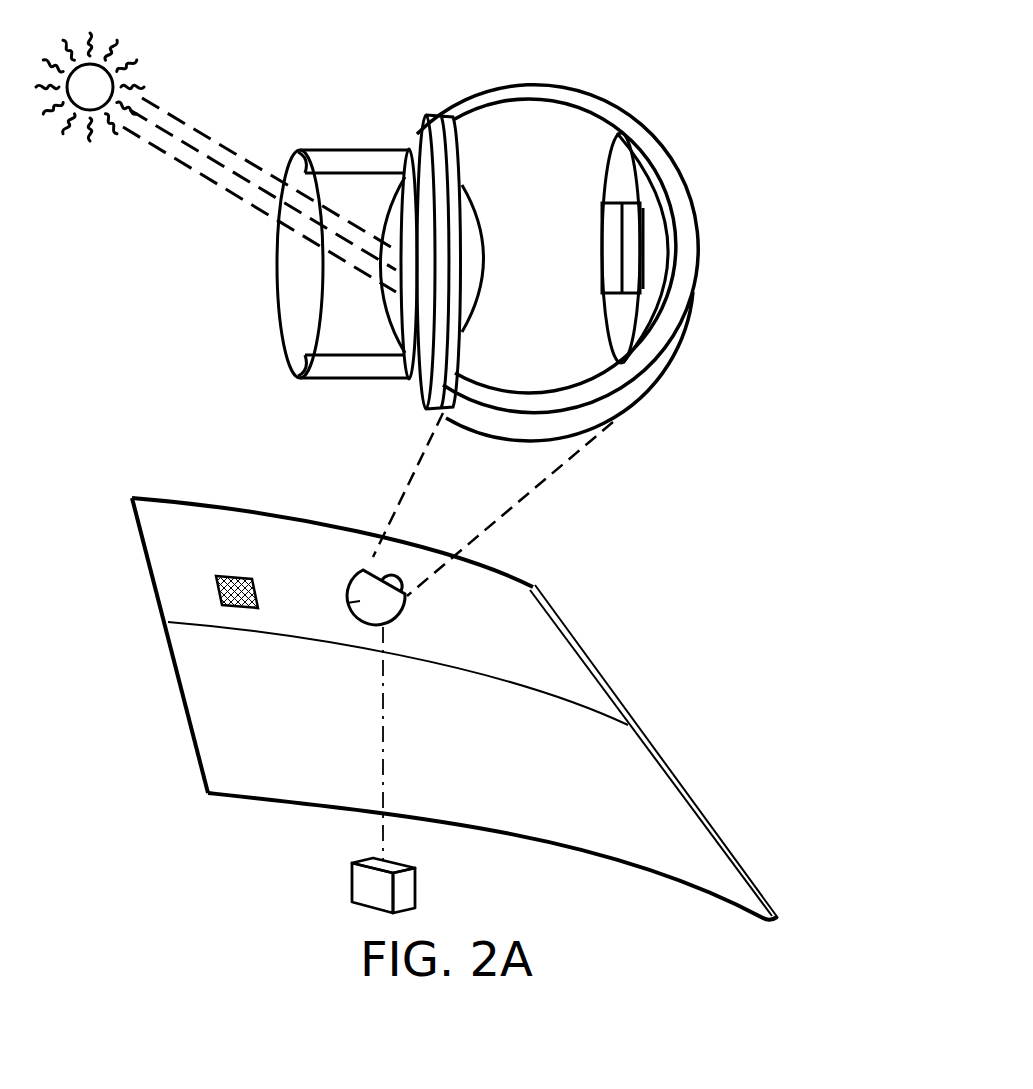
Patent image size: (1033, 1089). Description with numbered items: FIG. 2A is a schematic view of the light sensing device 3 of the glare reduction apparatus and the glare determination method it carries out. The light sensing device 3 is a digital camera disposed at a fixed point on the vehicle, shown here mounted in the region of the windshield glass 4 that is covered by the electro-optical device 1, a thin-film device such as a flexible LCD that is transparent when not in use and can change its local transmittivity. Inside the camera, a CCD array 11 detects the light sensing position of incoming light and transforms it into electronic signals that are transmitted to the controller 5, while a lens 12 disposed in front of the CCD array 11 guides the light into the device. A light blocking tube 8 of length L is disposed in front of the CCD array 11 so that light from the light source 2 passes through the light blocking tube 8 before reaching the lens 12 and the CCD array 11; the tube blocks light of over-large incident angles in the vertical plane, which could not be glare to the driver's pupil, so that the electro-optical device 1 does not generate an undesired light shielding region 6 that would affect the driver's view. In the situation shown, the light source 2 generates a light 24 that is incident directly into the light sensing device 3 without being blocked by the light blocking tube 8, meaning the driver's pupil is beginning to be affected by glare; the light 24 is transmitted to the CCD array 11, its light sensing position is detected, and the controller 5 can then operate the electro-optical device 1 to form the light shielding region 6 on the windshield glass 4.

The electro-optical device 1 is at (562, 650).
The light source 2 is at (103, 84).
The light sensing device 3 is at (650, 130).
The windshield glass 4 is at (673, 803).
The controller 5 is at (410, 892).
The light shielding region 6 is at (226, 578).
The light blocking tube 8 is at (353, 158).
The CCD array 11 is at (612, 220).
The lens 12 is at (402, 219).
The light 24 is at (204, 176).